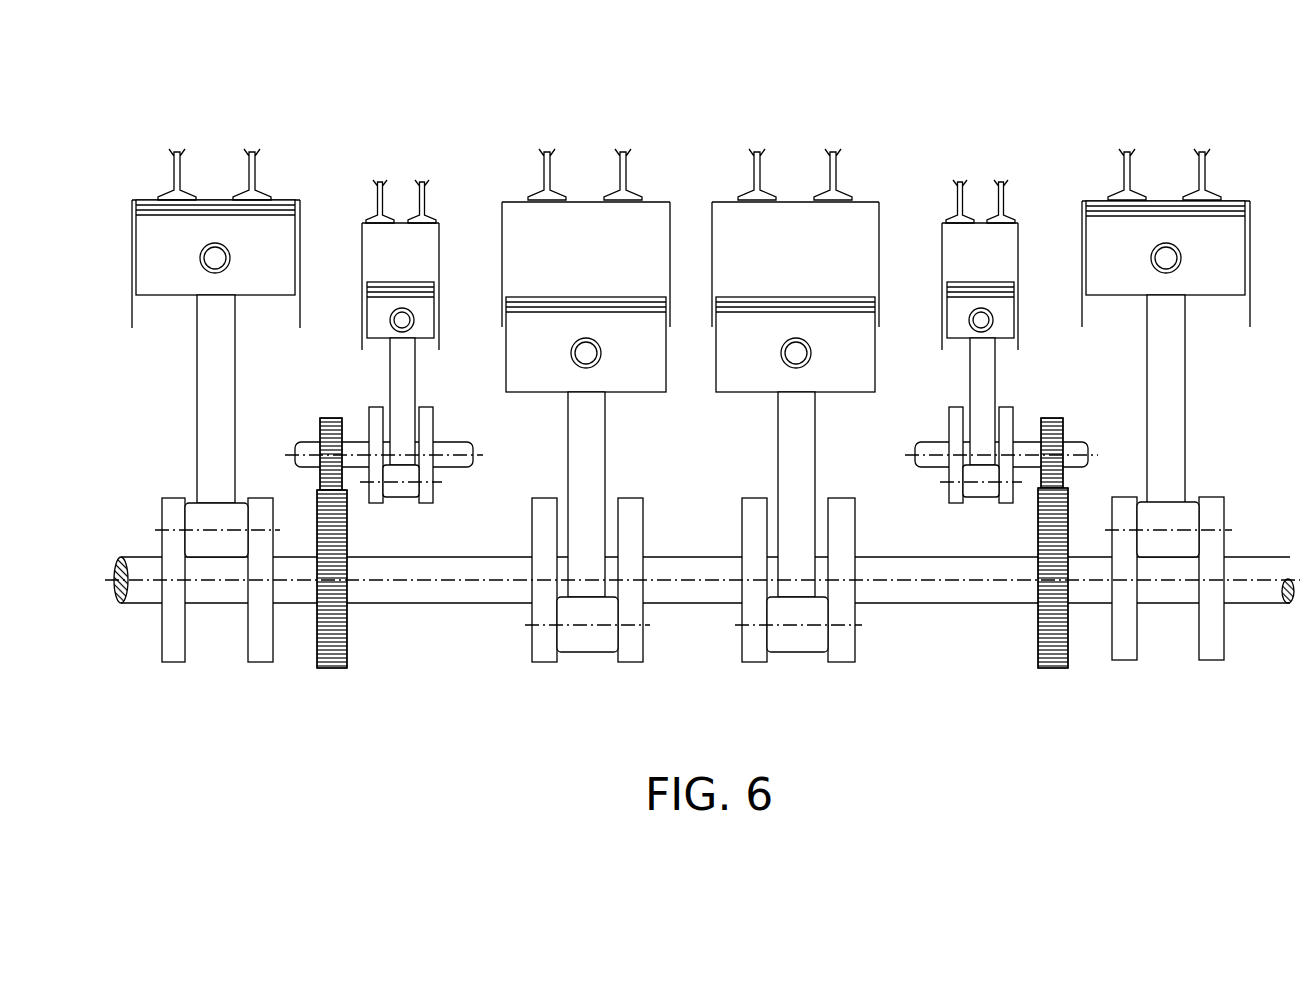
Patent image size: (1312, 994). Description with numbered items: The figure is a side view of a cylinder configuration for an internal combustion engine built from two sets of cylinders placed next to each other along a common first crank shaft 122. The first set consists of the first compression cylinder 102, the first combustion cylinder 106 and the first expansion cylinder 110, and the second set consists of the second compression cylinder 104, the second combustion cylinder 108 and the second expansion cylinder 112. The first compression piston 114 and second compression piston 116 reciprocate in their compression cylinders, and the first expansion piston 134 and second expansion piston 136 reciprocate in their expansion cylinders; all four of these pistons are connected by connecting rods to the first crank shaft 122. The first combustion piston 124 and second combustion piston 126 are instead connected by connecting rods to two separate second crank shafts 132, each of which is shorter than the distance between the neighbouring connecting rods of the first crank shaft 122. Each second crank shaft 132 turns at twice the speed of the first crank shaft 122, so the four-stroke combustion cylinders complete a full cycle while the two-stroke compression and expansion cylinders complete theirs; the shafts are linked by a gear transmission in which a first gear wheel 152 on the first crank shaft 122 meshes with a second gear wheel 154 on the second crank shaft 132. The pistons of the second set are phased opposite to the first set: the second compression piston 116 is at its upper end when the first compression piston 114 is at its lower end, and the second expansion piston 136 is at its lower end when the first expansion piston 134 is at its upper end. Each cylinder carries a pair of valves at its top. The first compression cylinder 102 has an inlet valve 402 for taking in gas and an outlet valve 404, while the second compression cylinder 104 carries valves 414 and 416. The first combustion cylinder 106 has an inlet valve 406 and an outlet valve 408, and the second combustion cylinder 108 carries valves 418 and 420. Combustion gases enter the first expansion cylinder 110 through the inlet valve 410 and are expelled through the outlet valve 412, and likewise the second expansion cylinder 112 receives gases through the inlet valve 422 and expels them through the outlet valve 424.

The first compression cylinder 102 is at (828, 379).
The second compression cylinder 104 is at (238, 379).
The first combustion cylinder 106 is at (996, 302).
The second combustion cylinder 108 is at (436, 302).
The first expansion cylinder 110 is at (1197, 377).
The second expansion cylinder 112 is at (618, 379).
The first compression piston 114 is at (840, 375).
The second compression piston 116 is at (172, 280).
The first crank shaft 122 is at (690, 603).
The first combustion piston 124 is at (958, 328).
The second combustion piston 126 is at (428, 328).
The second crank shaft 132 is at (458, 462).
The first expansion piston 134 is at (1216, 280).
The second expansion piston 136 is at (630, 375).
The first gear wheel 152 is at (330, 668).
The second gear wheel 154 is at (326, 418).
The inlet valve 402 is at (768, 162).
The outlet valve 404 is at (845, 162).
The inlet valve 406 is at (966, 188).
The outlet valve 408 is at (1008, 188).
The inlet valve 410 is at (1140, 162).
The outlet valve 412 is at (1215, 162).
The intake valve of second cylinder 414 is at (188, 162).
The exhaust valve of second cylinder 416 is at (262, 162).
The intake valve of fourth cylinder 418 is at (388, 188).
The exhaust valve of fourth cylinder 420 is at (428, 188).
The inlet valve 422 is at (558, 162).
The outlet valve 424 is at (635, 162).